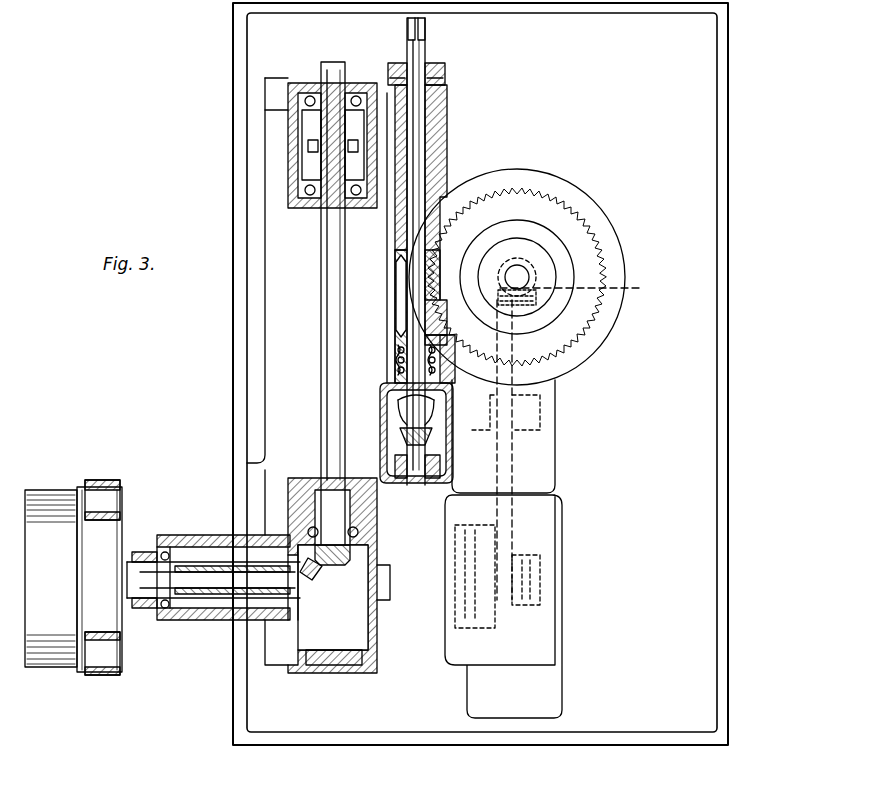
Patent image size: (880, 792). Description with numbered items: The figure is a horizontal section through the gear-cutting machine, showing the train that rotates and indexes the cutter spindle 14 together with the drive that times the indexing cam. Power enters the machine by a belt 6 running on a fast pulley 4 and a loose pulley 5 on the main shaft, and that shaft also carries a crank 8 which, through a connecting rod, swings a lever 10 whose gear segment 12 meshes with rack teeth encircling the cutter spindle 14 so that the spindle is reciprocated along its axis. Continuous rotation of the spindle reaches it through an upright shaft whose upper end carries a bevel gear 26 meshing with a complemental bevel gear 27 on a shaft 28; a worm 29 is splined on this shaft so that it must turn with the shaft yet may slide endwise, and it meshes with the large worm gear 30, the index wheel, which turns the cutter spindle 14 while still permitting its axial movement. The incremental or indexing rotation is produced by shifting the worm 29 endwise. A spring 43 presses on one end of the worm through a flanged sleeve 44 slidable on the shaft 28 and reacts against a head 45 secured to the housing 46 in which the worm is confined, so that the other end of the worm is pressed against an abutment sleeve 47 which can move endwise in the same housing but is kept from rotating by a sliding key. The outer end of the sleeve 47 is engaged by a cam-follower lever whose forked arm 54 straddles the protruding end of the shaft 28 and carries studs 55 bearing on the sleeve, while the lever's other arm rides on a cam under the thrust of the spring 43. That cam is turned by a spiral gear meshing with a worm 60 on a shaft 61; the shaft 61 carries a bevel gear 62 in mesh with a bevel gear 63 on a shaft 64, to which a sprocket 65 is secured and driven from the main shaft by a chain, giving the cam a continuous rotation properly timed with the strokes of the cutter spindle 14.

The fast pulley 4 is at (115, 545).
The loose pulley 5 is at (35, 508).
The belt 6 is at (104, 494).
The crank 8 is at (469, 152).
The lever 10 is at (512, 470).
The gear segment 12 is at (582, 290).
The cutter spindle 14 is at (519, 280).
The bevel gear 26 is at (400, 415).
The complemental bevel gear 27 is at (400, 432).
The shaft 28 is at (418, 328).
The worm 29 is at (400, 283).
The worm gear 30 is at (528, 207).
The spring 43 is at (400, 374).
The flanged sleeve 44 is at (400, 352).
The head 45 is at (443, 398).
The housing 46 is at (414, 312).
The abutment sleeve 47 is at (430, 100).
The lever arm 54 is at (416, 46).
The studs 55 is at (444, 78).
The worm 60 is at (312, 157).
The shaft 61 is at (330, 326).
The bevel gear 62 is at (352, 572).
The bevel gear 63 is at (306, 596).
The shaft 64 is at (222, 585).
The sprocket 65 is at (142, 612).